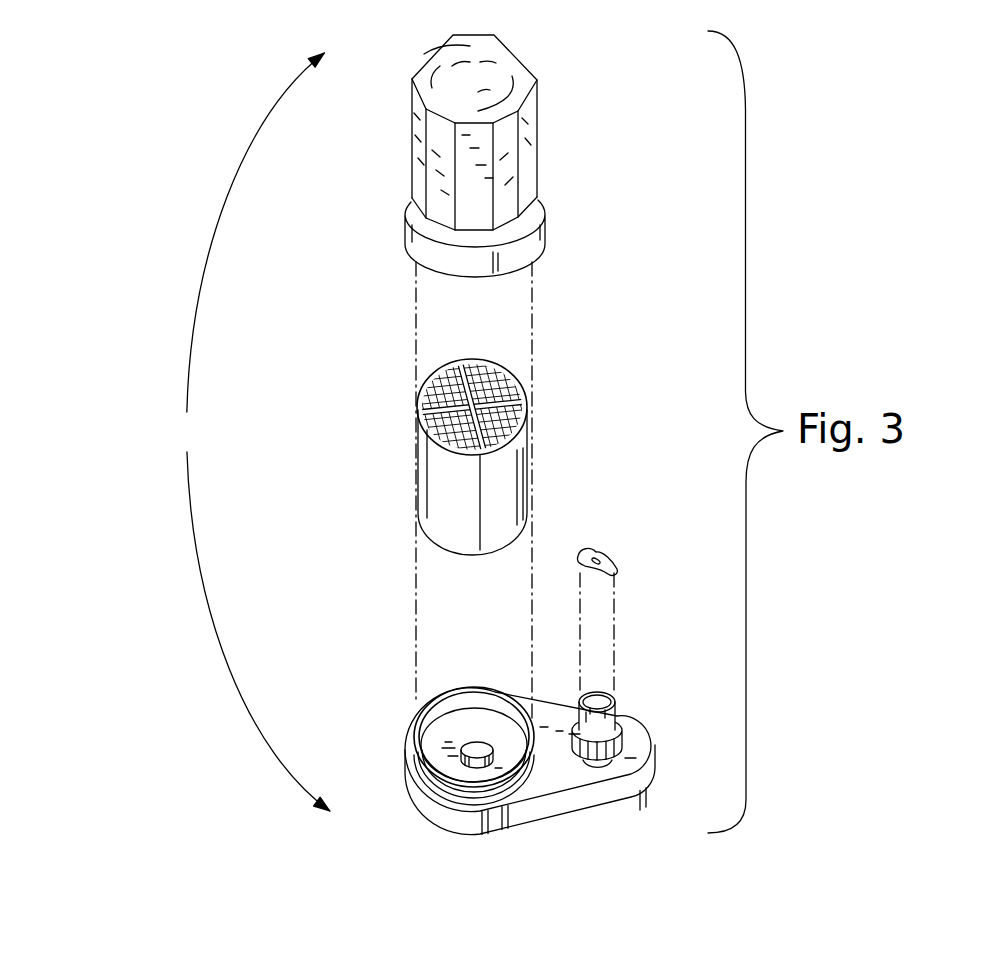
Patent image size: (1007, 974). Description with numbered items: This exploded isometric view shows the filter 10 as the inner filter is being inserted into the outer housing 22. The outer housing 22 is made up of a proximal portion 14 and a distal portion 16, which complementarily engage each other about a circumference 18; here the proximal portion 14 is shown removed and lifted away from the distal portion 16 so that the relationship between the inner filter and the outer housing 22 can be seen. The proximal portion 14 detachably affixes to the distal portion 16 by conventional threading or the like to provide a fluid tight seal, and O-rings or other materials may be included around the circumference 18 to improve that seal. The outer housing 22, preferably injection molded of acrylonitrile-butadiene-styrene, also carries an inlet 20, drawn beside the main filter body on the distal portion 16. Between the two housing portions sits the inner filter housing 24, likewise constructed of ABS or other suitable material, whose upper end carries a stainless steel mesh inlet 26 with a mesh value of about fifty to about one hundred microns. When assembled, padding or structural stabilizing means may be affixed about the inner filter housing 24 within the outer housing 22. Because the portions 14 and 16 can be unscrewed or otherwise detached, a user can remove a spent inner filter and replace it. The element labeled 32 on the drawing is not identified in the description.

The filter 10 is at (128, 317).
The proximal portion 14 is at (423, 53).
The distal portion 16 is at (443, 827).
The circumference 18 is at (447, 690).
The inlet 20 is at (602, 632).
The outer housing 22 is at (250, 432).
The inner filter housing 24 is at (417, 487).
The stainless steel mesh inlet 26 is at (503, 420).
The annular ring 32 is at (402, 748).